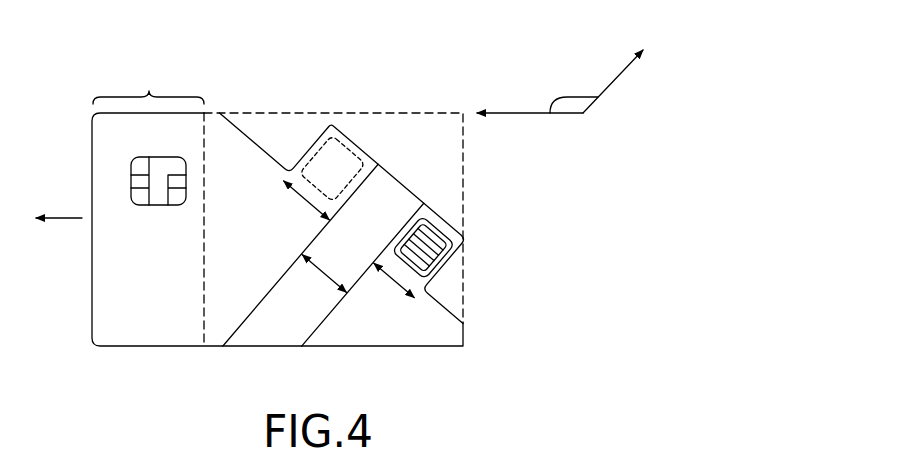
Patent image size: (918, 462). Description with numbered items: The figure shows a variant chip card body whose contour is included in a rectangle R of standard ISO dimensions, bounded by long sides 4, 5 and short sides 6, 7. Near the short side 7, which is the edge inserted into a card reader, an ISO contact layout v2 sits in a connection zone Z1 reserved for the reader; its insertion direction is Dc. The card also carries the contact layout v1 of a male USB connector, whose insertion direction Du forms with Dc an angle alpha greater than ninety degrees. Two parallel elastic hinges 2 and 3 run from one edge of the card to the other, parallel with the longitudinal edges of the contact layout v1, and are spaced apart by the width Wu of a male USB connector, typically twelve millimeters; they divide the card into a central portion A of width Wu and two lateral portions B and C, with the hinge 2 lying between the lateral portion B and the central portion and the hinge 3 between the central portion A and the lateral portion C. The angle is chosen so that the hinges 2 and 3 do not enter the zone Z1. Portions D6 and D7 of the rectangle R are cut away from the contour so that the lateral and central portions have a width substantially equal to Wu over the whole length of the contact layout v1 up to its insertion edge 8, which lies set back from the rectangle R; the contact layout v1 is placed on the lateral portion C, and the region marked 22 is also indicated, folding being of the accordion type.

The elastic hinge 2 is at (263, 305).
The elastic hinge 3 is at (333, 315).
The long side 4 is at (263, 112).
The long side 5 is at (112, 347).
The short side 6 is at (450, 193).
The short side 7 is at (90, 185).
The insertion edge 8 is at (388, 172).
The corner region 22 is at (532, 290).
The contact layout of a male USB connector v1 is at (463, 242).
The contact layout v2 is at (157, 166).
The connection zone Z1 is at (148, 84).
The cut portion D6 is at (453, 308).
The cut portion D7 is at (372, 128).
The central portion A is at (282, 337).
The lateral portion B is at (180, 340).
The lateral portion C is at (388, 333).
The rectangle R is at (466, 343).
The insertion direction Dc is at (292, 184).
The insertion direction Du is at (590, 68).
The width of a male USB connector Wu is at (336, 254).